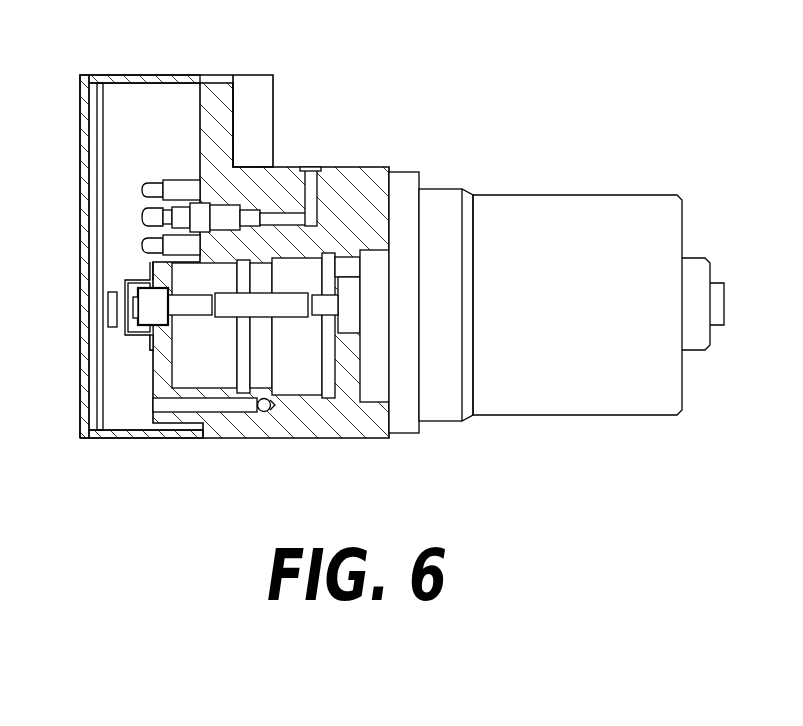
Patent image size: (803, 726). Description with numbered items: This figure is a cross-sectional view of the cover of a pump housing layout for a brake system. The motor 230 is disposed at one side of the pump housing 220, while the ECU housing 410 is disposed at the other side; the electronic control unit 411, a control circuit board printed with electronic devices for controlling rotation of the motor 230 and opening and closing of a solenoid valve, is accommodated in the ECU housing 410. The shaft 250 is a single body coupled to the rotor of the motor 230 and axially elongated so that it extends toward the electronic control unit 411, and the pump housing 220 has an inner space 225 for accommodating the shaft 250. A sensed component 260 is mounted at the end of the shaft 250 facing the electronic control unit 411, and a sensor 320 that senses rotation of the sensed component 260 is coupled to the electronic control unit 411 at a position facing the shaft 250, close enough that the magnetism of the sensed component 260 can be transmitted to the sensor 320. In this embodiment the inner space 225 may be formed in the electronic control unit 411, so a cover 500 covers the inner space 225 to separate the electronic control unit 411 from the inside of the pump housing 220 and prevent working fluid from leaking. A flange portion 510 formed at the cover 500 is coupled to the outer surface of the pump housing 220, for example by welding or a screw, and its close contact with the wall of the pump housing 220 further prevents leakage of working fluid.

The ECU housing 410 is at (103, 85).
The electronic control unit 411 is at (100, 256).
The pump housing 220 is at (342, 170).
The motor 230 is at (582, 203).
The shaft 250 is at (293, 308).
The sensed component 260 is at (138, 308).
The sensor 320 is at (108, 298).
The flange portion 510 is at (150, 268).
The inner space 225 is at (140, 335).
The cover 500 is at (135, 335).